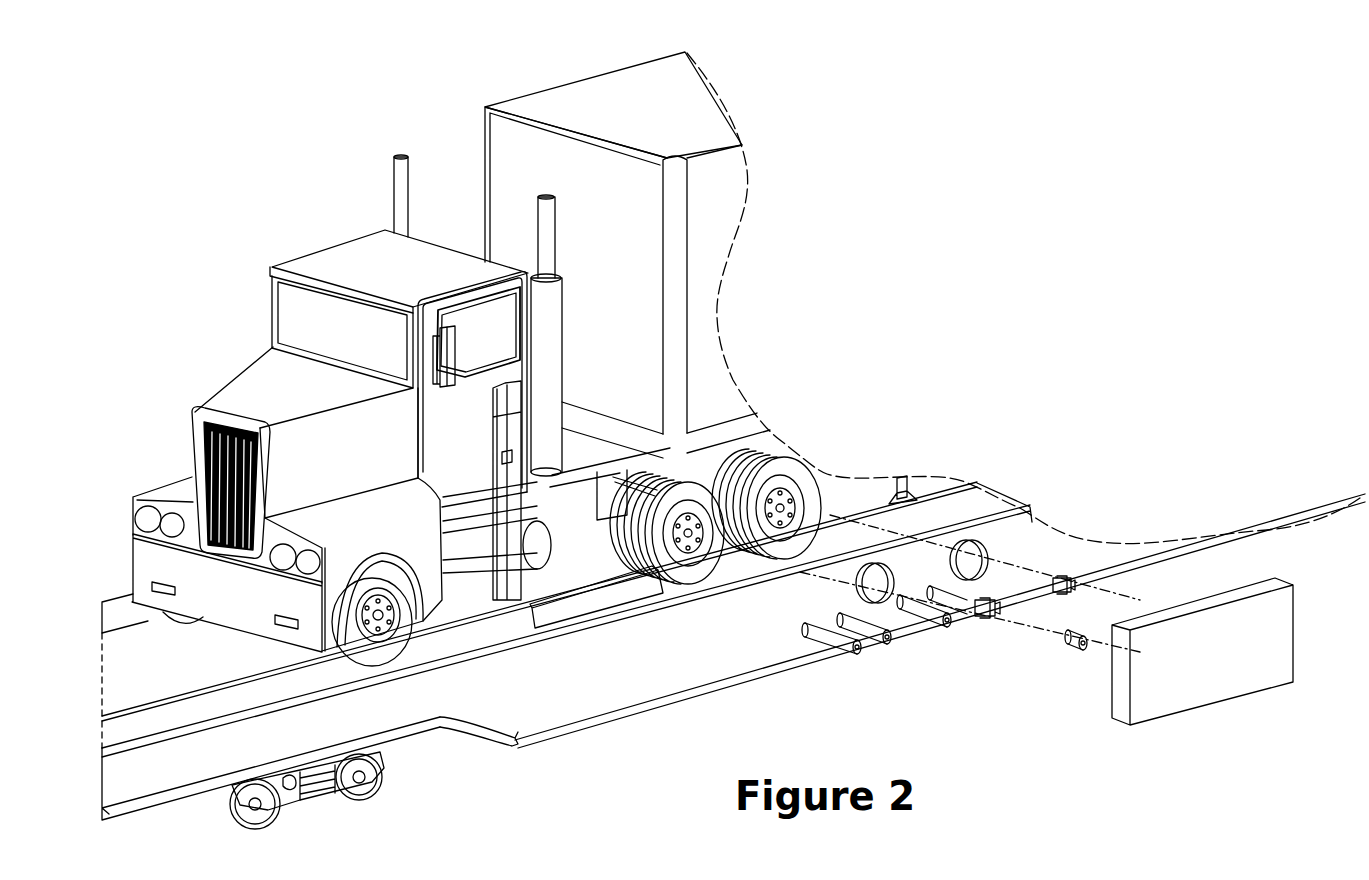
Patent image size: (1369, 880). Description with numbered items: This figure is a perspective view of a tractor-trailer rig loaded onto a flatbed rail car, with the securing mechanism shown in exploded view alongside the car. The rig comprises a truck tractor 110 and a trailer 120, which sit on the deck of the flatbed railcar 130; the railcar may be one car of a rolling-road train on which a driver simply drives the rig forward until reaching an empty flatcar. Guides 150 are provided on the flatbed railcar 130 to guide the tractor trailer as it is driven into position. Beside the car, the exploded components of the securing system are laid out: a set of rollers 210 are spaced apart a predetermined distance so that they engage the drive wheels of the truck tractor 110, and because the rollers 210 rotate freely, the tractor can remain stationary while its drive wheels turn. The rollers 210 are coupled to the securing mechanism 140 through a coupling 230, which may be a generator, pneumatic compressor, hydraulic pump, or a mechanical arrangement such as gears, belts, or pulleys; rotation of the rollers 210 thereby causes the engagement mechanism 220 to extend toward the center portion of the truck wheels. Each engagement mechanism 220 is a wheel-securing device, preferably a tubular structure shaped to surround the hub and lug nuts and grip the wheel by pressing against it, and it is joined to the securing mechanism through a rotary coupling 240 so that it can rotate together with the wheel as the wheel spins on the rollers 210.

The truck tractor 110 is at (476, 410).
The trailer 120 is at (627, 255).
The flatbed railcar 130 is at (733, 441).
The securing mechanism 140 is at (1202, 651).
The guides 150 is at (596, 597).
The rollers 210 is at (978, 622).
The engagement mechanism 220 is at (955, 552).
The coupling 230 is at (1072, 650).
The rotary coupling 240 is at (1060, 577).